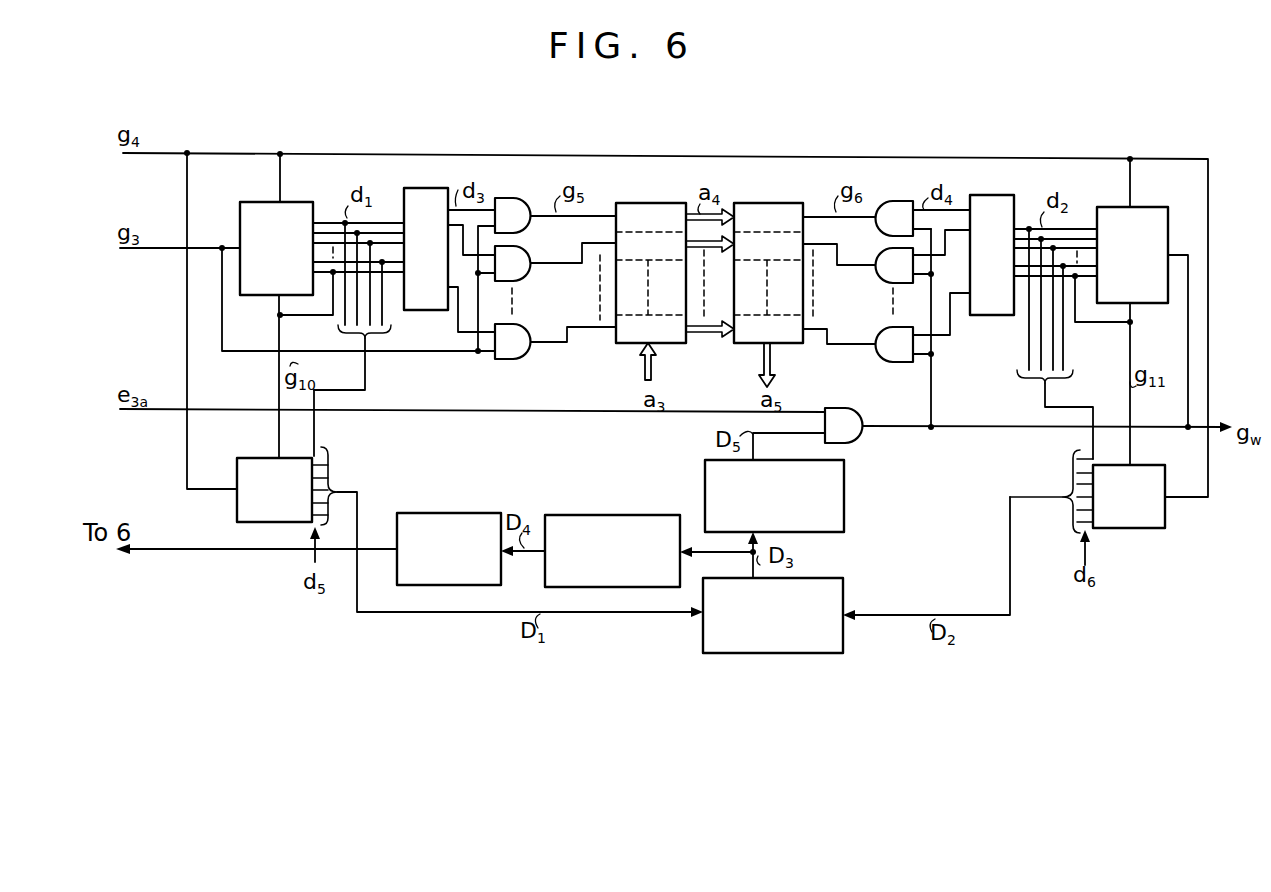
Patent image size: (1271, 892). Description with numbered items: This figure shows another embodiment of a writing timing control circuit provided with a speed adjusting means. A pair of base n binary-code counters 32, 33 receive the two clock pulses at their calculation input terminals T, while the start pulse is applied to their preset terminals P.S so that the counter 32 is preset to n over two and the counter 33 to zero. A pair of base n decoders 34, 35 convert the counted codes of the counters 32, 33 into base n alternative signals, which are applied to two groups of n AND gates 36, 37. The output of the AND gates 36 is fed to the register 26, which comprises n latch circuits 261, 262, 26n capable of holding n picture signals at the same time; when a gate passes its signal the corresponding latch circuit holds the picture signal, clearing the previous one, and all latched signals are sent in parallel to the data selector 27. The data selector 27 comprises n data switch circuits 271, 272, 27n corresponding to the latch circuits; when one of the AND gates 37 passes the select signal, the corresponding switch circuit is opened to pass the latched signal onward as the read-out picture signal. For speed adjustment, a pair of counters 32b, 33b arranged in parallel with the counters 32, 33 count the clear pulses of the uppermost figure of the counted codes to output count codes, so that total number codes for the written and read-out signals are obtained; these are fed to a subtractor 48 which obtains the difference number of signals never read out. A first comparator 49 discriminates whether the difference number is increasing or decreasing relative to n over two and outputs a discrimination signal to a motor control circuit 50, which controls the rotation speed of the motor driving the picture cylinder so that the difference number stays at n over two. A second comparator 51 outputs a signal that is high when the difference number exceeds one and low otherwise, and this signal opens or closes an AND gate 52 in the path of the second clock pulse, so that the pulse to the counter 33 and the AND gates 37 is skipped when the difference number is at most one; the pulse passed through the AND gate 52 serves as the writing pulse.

The register 26 is at (637, 293).
The latch circuit 261 is at (652, 219).
The latch circuit 262 is at (652, 247).
The latch circuit 26n is at (626, 344).
The data selector 27 is at (779, 293).
The data switch circuit 271 is at (769, 219).
The data switch circuit 272 is at (769, 247).
The data switch circuit 27n is at (769, 330).
The base n binary-code counter 32 is at (296, 263).
The counter 32b is at (237, 506).
The base n binary-code counter 33 is at (1143, 268).
The counter 33b is at (1135, 530).
The base n decoder 34 is at (428, 312).
The base n decoder 35 is at (990, 317).
The AND gates 36 is at (549, 392).
The AND gates 37 is at (901, 362).
The subtractor 48 is at (815, 653).
The first comparator 49 is at (620, 514).
The motor control circuit 50 is at (432, 512).
The second comparator 51 is at (844, 496).
The AND gate 52 is at (852, 442).